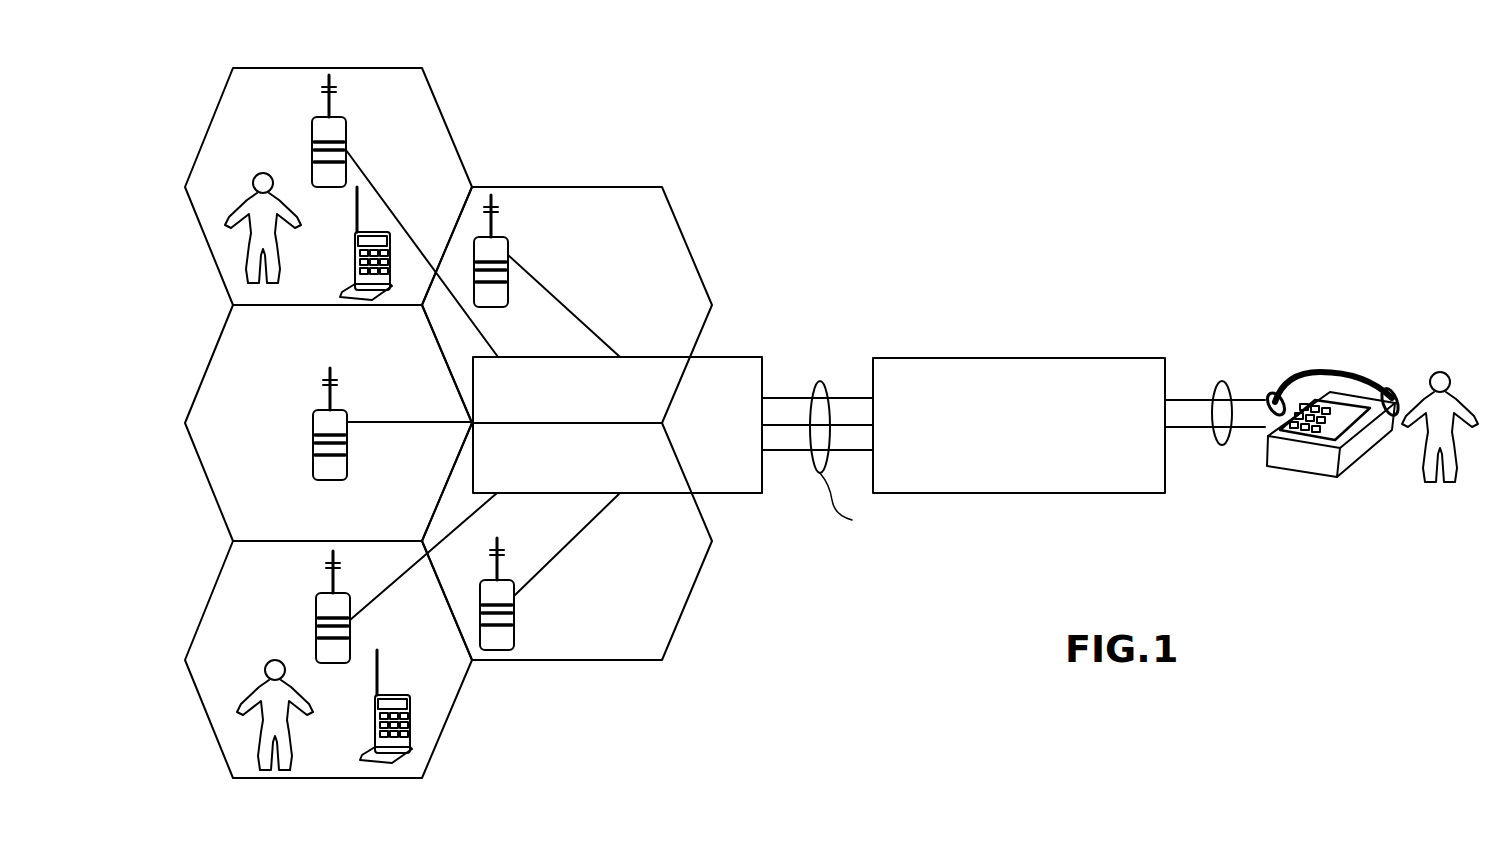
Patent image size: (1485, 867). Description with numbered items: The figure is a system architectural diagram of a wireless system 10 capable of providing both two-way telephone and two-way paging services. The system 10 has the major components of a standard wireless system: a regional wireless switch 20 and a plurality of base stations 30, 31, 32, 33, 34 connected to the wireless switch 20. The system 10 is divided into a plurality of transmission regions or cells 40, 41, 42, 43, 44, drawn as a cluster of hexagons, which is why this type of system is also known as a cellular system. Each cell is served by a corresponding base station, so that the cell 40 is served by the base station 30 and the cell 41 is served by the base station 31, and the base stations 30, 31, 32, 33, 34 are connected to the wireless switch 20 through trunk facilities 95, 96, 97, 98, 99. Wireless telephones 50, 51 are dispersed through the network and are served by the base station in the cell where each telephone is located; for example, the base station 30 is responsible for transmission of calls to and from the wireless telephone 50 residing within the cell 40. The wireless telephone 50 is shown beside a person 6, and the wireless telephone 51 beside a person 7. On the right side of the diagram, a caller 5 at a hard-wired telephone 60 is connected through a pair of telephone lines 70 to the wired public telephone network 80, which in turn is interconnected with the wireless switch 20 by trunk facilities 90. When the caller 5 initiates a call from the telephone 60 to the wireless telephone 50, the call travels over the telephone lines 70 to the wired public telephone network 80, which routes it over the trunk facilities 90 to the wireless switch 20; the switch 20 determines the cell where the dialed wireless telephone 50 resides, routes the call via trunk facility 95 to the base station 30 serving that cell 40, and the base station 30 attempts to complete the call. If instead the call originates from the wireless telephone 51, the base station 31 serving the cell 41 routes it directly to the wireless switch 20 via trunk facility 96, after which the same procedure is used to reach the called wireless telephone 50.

The wireless system 10 is at (818, 148).
The cell 40 is at (210, 130).
The cell 41 is at (217, 586).
The cell 42 is at (208, 367).
The cell 43 is at (687, 245).
The cell 44 is at (693, 588).
The base station 30 is at (312, 131).
The base station 31 is at (316, 612).
The base station 32 is at (313, 430).
The base station 33 is at (508, 289).
The base station 34 is at (514, 612).
The trunk facility 95 is at (346, 141).
The trunk facility 96 is at (392, 583).
The trunk facility 97 is at (387, 422).
The trunk facility 98 is at (567, 545).
The trunk facility 99 is at (533, 276).
The wireless subscriber 6 is at (241, 205).
The wireless subscriber 7 is at (248, 692).
The caller 5 is at (1441, 371).
The wireless telephone 50 is at (353, 262).
The wireless telephone 51 is at (402, 693).
The wireless switch 20 is at (733, 357).
The trunk facilities 90 is at (820, 381).
The wired public telephone network 80 is at (1127, 358).
The pair of telephone lines 70 is at (1228, 382).
The hard-wired telephone 60 is at (1343, 372).